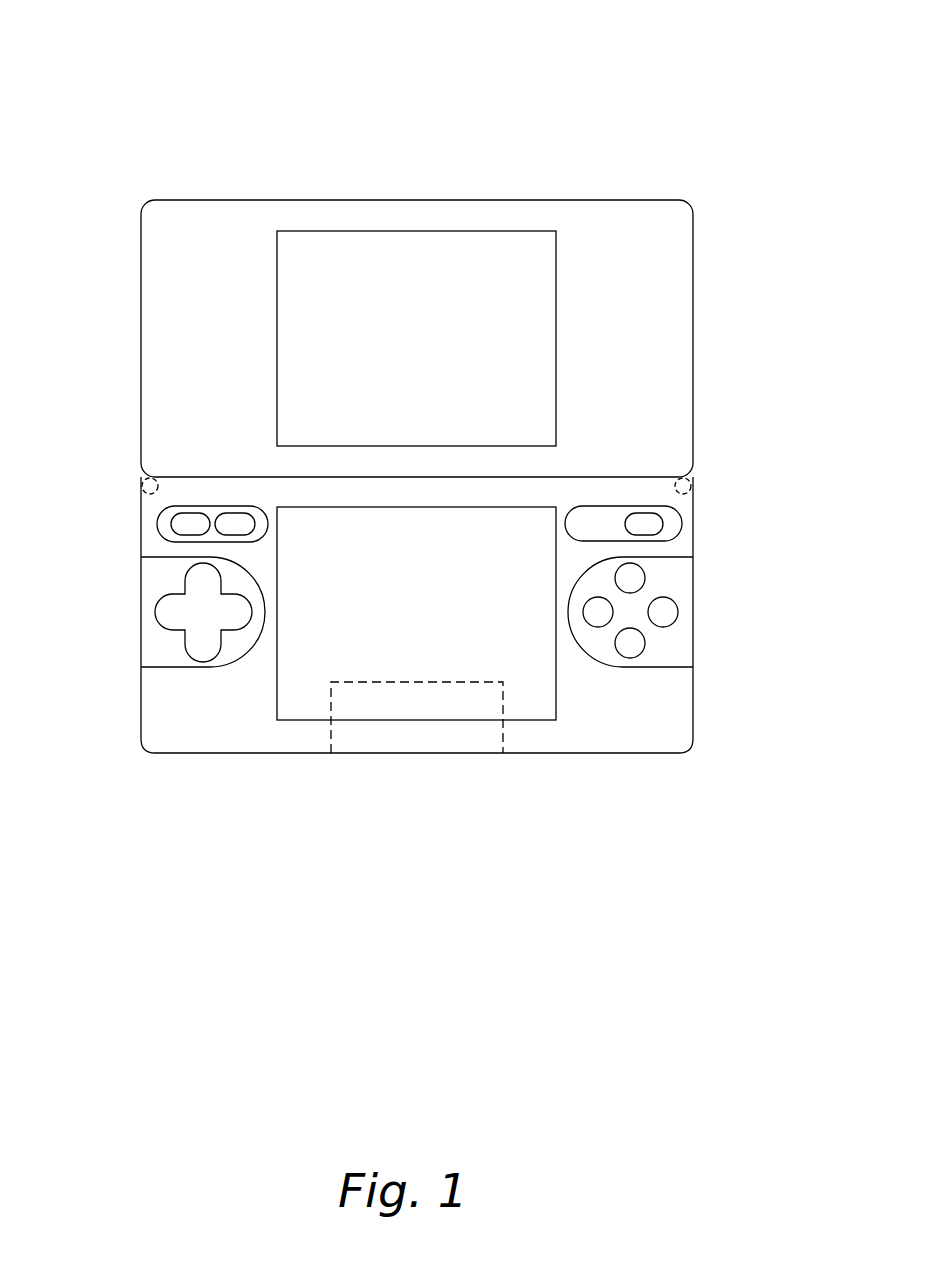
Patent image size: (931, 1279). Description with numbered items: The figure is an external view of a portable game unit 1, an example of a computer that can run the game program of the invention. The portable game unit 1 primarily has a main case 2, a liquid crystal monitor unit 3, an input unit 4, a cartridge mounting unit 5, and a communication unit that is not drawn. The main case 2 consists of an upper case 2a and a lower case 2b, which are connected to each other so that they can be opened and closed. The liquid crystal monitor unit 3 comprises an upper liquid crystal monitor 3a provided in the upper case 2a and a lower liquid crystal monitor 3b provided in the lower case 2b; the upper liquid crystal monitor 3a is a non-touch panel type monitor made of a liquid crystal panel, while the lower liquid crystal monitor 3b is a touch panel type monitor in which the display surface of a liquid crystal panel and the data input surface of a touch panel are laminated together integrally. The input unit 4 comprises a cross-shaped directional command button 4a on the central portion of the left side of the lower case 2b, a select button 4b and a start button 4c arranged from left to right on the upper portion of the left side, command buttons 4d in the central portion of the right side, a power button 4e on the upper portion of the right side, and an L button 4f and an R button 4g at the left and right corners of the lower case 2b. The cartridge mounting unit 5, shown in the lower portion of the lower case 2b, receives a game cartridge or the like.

The portable game unit 1 is at (699, 116).
The main case 2 is at (710, 313).
The upper case 2a is at (647, 372).
The lower case 2b is at (678, 705).
The liquid crystal monitor unit 3 is at (399, 218).
The upper liquid crystal monitor 3a is at (452, 268).
The lower liquid crystal monitor 3b is at (533, 700).
The input unit 4 is at (187, 708).
The cross-shaped directional command button 4a is at (167, 613).
The select button 4b is at (177, 522).
The start button 4c is at (234, 529).
The command buttons 4d is at (679, 580).
The power button 4e is at (648, 523).
The L button 4f is at (142, 477).
The R button 4g is at (690, 479).
The cartridge mounting unit 5 is at (493, 733).